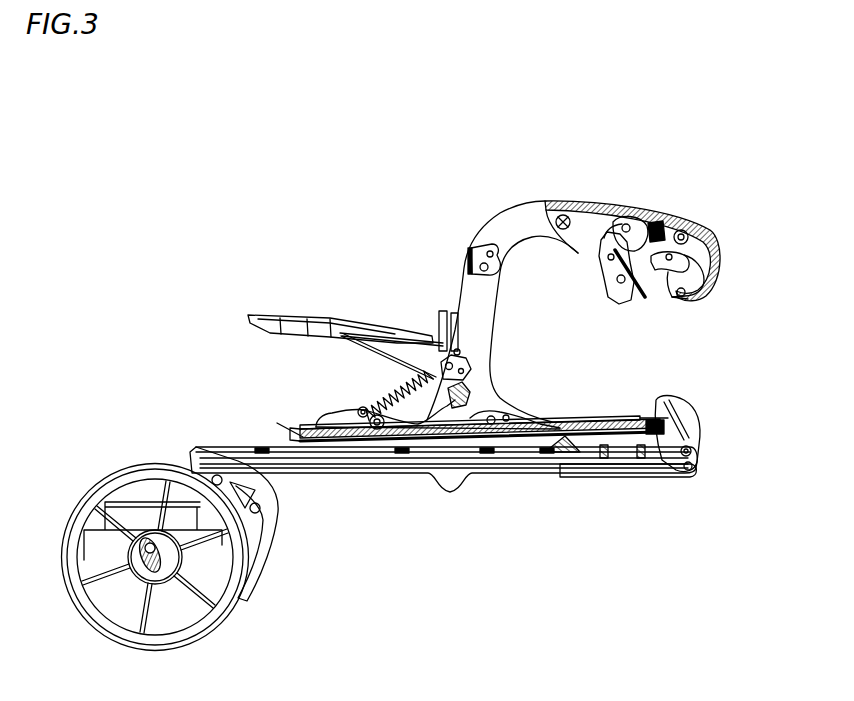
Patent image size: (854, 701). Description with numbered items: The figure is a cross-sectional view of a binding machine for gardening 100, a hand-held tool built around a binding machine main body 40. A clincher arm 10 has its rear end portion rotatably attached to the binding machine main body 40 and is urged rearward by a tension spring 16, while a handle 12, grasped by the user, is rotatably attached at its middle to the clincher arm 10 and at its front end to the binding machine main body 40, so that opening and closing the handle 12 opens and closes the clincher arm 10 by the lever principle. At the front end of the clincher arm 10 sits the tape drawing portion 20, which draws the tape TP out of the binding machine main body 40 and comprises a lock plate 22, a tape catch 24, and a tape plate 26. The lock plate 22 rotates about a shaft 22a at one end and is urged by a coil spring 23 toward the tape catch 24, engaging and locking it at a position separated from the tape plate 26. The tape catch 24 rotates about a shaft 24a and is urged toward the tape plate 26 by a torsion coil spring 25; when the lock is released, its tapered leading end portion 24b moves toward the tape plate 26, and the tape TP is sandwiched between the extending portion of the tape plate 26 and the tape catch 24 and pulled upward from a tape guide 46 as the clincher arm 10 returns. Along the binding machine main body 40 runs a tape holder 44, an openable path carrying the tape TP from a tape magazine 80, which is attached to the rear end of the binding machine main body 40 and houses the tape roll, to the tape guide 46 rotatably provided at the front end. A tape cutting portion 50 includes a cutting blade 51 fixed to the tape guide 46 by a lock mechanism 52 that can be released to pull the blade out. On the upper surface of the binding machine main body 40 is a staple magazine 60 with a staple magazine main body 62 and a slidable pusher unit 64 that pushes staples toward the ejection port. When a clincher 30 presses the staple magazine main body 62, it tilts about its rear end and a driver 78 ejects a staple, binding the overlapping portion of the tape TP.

The binding machine for gardening 100 is at (216, 198).
The clincher arm 10 is at (518, 214).
The handle 12 is at (298, 318).
The tension spring 16 is at (388, 393).
The tape drawing portion 20 is at (680, 200).
The lock plate 22 is at (620, 216).
The shaft 22a is at (604, 240).
The coil spring 23 is at (652, 222).
The tape catch 24 is at (718, 272).
The shaft 24a is at (684, 298).
The leading end portion 24b is at (658, 276).
The torsion coil spring 25 is at (690, 232).
The tape plate 26 is at (646, 300).
The clincher 30 is at (600, 298).
The binding machine main body 40 is at (383, 484).
The tape holder 44 is at (478, 474).
The tape guide 46 is at (700, 424).
The tape cutting portion 50 is at (697, 414).
The cutting blade 51 is at (664, 402).
The lock mechanism 52 is at (700, 438).
The staple magazine 60 is at (596, 408).
The staple magazine main body 62 is at (561, 420).
The pusher unit 64 is at (541, 447).
The driver 78 is at (692, 470).
The tape magazine 80 is at (243, 597).
The tape TP is at (600, 470).